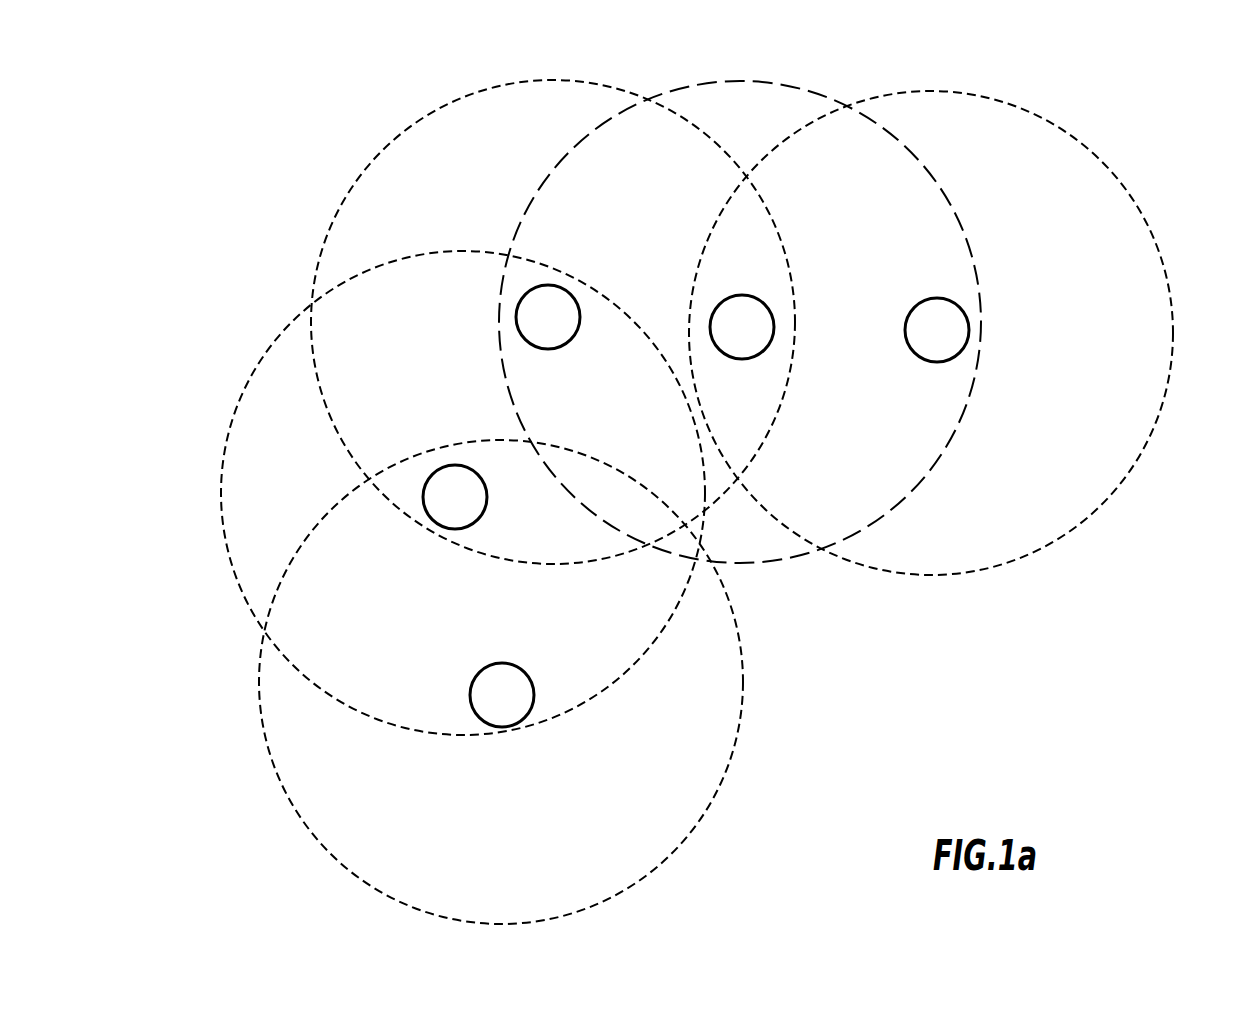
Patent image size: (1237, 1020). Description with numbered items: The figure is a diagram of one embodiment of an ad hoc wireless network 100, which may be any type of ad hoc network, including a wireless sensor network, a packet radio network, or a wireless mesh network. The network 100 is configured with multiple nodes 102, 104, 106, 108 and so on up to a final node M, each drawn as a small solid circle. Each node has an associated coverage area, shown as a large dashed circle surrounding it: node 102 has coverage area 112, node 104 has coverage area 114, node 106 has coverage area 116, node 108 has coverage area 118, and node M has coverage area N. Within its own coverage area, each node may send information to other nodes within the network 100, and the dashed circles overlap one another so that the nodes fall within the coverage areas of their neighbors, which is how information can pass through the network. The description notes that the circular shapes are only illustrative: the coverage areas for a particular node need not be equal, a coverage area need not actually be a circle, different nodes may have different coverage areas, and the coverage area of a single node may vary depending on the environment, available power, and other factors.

The ad hoc wireless network 100 is at (1063, 99).
The node 102 is at (560, 348).
The node 104 is at (725, 298).
The node 106 is at (927, 298).
The node 108 is at (484, 515).
The coverage area 112 is at (362, 175).
The coverage area 114 is at (692, 85).
The coverage area 116 is at (1128, 195).
The coverage area 118 is at (258, 368).
The node M is at (470, 685).
The coverage area N is at (730, 758).